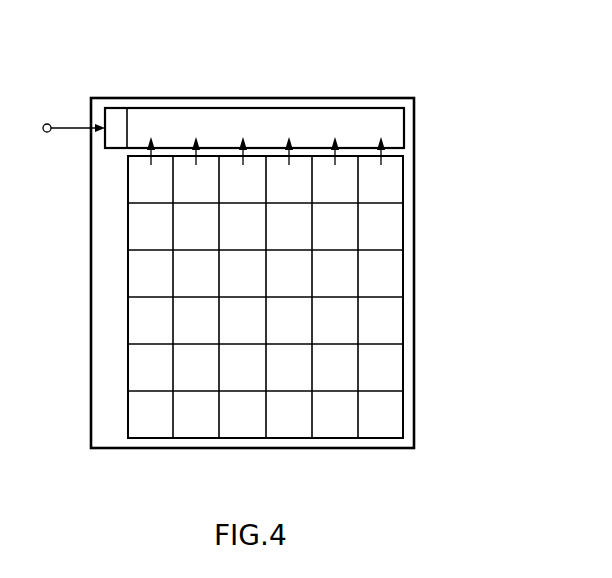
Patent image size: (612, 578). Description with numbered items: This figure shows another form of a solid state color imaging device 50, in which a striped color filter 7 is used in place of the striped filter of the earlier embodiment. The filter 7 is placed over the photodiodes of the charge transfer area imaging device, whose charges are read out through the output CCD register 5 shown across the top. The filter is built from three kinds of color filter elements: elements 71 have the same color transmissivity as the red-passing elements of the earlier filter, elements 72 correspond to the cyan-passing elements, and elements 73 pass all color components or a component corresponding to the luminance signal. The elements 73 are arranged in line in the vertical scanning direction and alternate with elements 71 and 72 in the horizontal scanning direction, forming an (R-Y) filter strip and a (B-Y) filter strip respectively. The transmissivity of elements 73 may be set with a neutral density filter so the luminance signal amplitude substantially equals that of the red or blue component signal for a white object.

The output CCD register 5 is at (345, 121).
The striped color filter 7 is at (415, 377).
The color imaging device 50 is at (91, 329).
The color filter element 71 is at (128, 177).
The color filter element 72 is at (128, 218).
The color filter element 73 is at (396, 183).